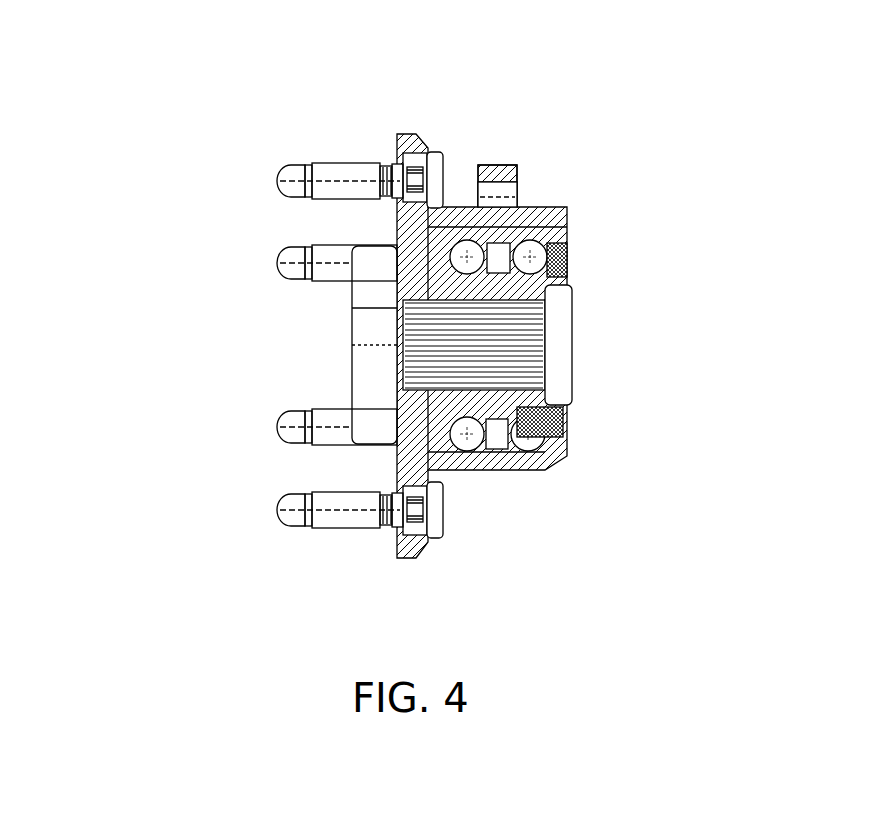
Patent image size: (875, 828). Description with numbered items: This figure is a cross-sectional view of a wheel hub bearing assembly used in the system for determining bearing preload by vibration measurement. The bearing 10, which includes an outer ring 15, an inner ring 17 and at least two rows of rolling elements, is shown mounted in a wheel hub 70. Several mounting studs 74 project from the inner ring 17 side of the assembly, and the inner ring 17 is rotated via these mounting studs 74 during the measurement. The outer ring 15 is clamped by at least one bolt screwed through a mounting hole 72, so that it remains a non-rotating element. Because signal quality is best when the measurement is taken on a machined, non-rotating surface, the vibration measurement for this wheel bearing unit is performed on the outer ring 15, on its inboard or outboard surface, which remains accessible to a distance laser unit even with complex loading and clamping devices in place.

The wheel hub 70 is at (647, 145).
The bearing 10 is at (602, 446).
The mounting studs 74 is at (288, 170).
The outer ring 15 is at (497, 175).
The mounting hole 72 is at (505, 200).
The inner ring 17 is at (413, 463).